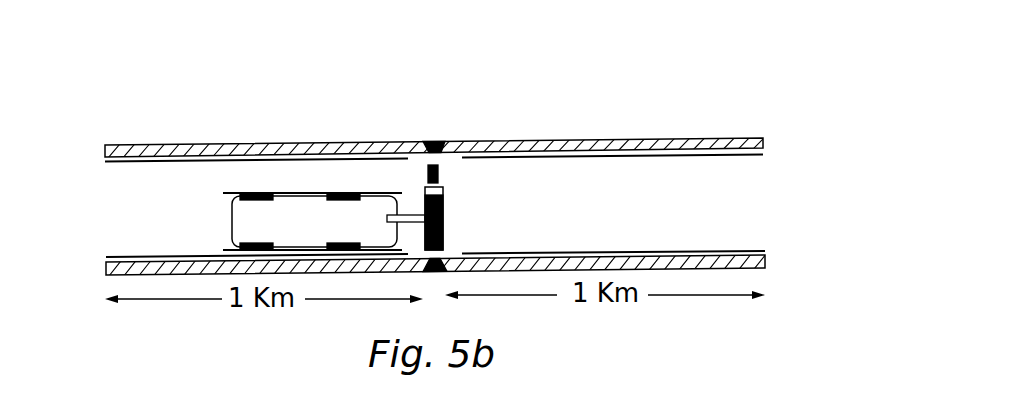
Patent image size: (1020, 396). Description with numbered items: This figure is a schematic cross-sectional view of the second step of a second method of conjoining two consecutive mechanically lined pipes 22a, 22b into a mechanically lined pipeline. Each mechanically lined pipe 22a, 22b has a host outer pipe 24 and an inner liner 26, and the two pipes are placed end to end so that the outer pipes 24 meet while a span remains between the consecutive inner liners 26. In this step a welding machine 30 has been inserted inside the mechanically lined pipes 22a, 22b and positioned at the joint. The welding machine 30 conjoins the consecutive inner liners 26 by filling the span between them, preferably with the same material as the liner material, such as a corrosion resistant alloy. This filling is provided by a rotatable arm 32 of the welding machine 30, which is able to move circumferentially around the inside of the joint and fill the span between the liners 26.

The mechanically lined pipe 22a is at (118, 147).
The mechanically lined pipe 22b is at (590, 140).
The host outer pipe 24 is at (753, 138).
The inner liner 26 is at (127, 258).
The welding machine 30 is at (232, 220).
The rotatable arm 32 is at (508, 216).